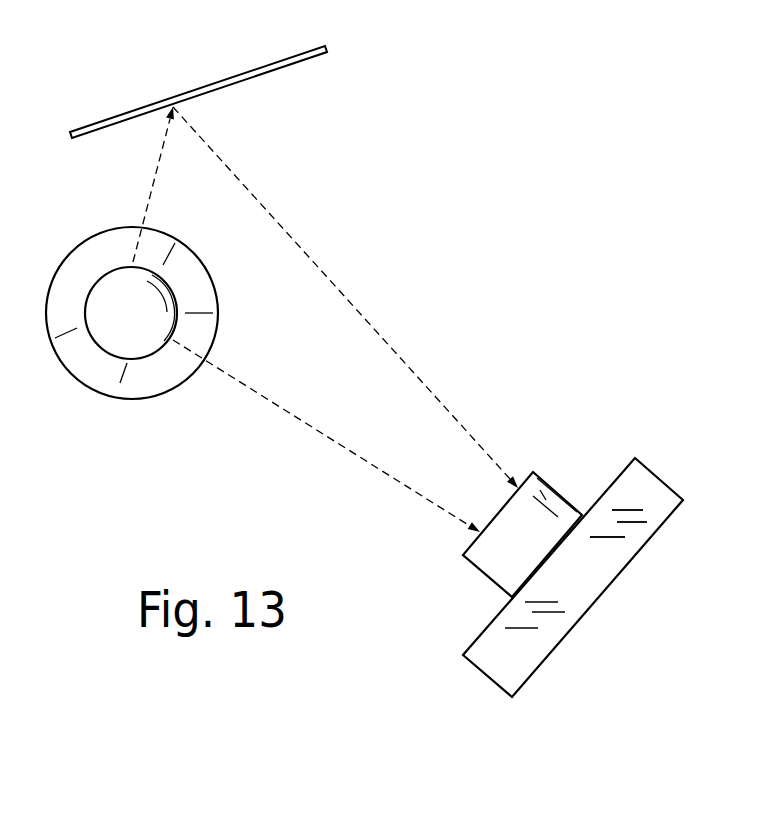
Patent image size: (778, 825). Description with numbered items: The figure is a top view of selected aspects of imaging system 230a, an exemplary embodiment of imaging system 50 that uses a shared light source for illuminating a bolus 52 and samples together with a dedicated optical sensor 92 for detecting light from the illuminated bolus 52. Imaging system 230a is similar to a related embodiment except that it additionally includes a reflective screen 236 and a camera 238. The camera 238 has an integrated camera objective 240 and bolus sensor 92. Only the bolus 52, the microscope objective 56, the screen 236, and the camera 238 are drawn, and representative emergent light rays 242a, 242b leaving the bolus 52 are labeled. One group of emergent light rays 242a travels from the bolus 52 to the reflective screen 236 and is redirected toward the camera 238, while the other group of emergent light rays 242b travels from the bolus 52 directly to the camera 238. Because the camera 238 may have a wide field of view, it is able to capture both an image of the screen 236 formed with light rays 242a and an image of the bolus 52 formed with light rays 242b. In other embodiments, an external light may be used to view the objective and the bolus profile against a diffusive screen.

The imaging system 50 is at (472, 142).
The imaging system 230a is at (467, 200).
The reflective screen 236 is at (210, 83).
The microscope objective 56 is at (108, 233).
The bolus 52 is at (98, 278).
The emergent light ray 242a is at (158, 165).
The emergent light ray 242b is at (312, 428).
The camera 238 is at (618, 445).
The camera objective 240 is at (548, 482).
The optical sensor 92 is at (587, 573).